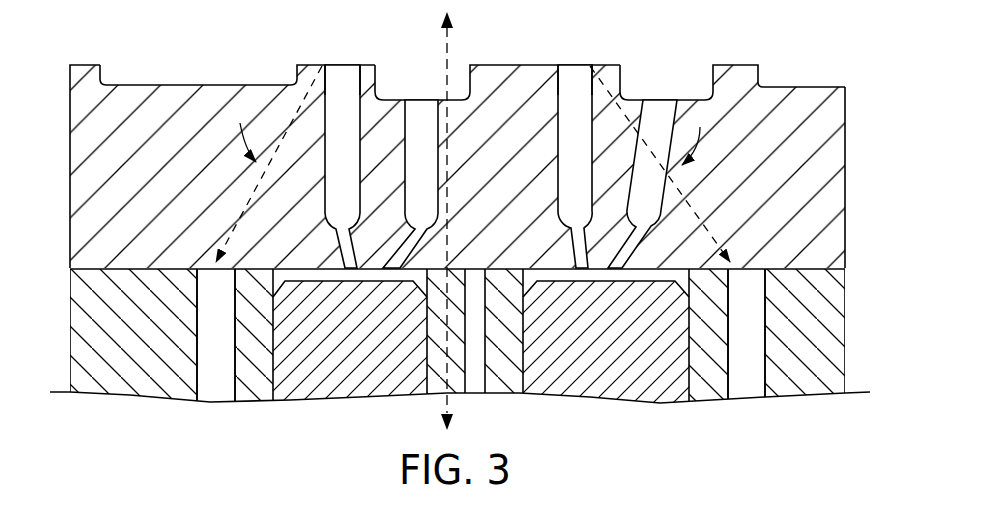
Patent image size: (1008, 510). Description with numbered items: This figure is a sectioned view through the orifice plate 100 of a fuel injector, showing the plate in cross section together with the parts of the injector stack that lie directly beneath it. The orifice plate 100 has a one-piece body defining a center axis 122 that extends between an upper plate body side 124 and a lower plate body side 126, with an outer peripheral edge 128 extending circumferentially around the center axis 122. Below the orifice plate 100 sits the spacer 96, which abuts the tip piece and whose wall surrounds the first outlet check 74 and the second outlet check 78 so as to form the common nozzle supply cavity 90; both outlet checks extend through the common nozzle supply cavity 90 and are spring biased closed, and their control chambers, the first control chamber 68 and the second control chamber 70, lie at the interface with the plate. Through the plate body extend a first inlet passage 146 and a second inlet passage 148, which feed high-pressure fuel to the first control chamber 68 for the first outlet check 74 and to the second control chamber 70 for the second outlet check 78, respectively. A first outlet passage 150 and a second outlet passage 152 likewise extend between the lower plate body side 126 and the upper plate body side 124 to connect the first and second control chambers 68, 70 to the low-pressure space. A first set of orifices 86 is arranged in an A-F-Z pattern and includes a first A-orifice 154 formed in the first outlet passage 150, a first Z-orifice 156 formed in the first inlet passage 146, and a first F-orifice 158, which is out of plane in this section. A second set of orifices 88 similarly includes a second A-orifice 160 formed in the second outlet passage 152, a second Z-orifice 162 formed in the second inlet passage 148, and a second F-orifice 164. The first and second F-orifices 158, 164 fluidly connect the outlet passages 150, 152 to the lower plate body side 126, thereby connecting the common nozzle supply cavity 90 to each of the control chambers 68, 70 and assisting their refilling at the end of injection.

The first control chamber 68 is at (294, 277).
The second control chamber 70 is at (556, 277).
The first outlet check 74 is at (352, 388).
The second outlet check 78 is at (565, 388).
The first set of orifices 86 is at (243, 130).
The second set of orifices 88 is at (697, 134).
The common nozzle supply cavity 90 is at (210, 373).
The spacer 96 is at (75, 289).
The orifice plate 100 is at (815, 101).
The center axis 122 is at (447, 44).
The upper plate body side 124 is at (281, 60).
The lower plate body side 126 is at (788, 280).
The outer peripheral edge 128 is at (855, 186).
The first inlet passage 146 is at (414, 102).
The second inlet passage 148 is at (671, 103).
The first outlet passage 150 is at (331, 78).
The second outlet passage 152 is at (591, 78).
The first A-orifice 154 is at (340, 234).
The first Z-orifice 156 is at (402, 242).
The first F-orifice 158 is at (254, 190).
The second A-orifice 160 is at (575, 250).
The second Z-orifice 162 is at (630, 246).
The second F-orifice 164 is at (679, 184).